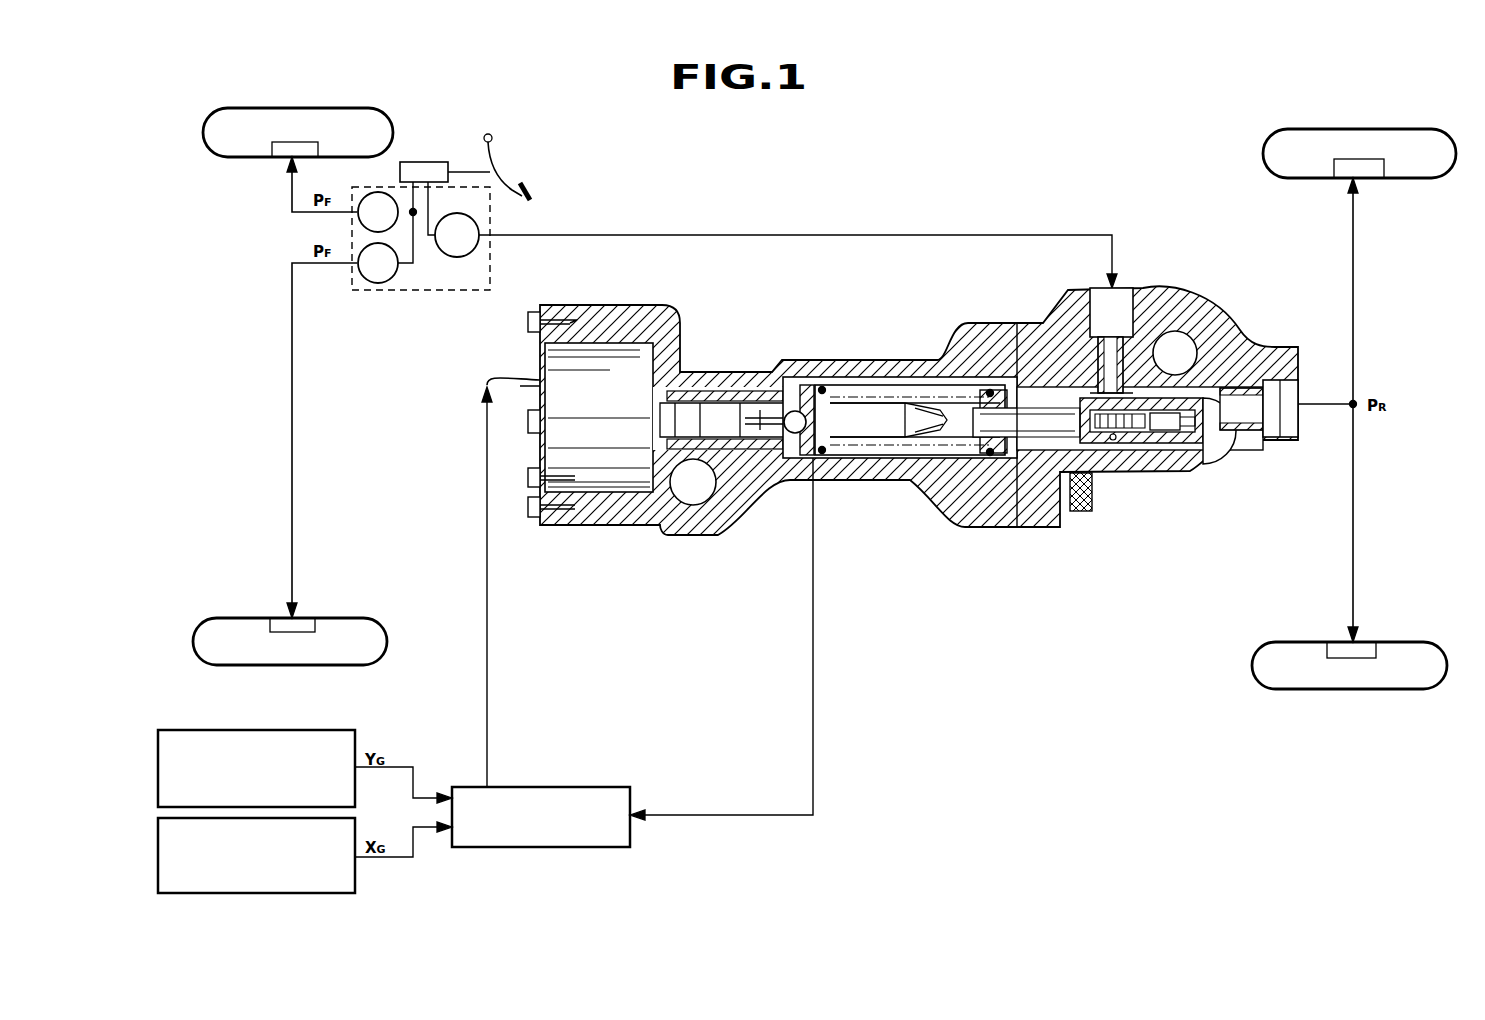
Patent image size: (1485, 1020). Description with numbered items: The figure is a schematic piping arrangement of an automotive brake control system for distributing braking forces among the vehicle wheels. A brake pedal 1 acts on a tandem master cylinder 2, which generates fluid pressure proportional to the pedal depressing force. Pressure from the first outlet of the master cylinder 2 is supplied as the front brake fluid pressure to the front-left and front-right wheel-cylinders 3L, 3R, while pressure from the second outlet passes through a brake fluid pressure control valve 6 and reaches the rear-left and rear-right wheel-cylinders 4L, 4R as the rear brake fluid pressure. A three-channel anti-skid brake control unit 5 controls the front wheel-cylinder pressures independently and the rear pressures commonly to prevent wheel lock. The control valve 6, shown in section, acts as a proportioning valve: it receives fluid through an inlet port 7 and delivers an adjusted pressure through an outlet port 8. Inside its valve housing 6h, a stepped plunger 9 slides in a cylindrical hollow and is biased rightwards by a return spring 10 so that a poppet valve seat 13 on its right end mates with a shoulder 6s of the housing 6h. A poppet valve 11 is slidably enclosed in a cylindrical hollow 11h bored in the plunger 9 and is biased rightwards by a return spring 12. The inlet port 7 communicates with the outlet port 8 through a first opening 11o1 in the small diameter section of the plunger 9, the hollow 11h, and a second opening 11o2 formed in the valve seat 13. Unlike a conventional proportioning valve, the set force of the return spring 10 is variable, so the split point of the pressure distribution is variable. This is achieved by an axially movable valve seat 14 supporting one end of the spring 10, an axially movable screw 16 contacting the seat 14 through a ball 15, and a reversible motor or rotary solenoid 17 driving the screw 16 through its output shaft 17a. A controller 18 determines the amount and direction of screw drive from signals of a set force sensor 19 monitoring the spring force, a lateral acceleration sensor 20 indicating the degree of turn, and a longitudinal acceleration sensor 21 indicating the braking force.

The brake pedal 1 is at (535, 193).
The tandem master cylinder 2 is at (428, 162).
The front-right wheel-cylinder 3R is at (280, 152).
The front-left wheel-cylinder 3L is at (300, 618).
The rear-right wheel-cylinder 4R is at (1360, 170).
The rear-left wheel-cylinder 4L is at (1360, 641).
The 3-channel anti-skid brake control unit 5 is at (433, 292).
The brake fluid pressure control valve 6 is at (1207, 295).
The valve housing 6h is at (1217, 333).
The shoulder 6s is at (1212, 415).
The inlet port 7 is at (1110, 302).
The outlet port 8 is at (1277, 413).
The stepped plunger 9 is at (1017, 412).
The return spring 10 is at (905, 470).
The poppet valve 11 is at (1187, 444).
The first opening 11o1 is at (1050, 503).
The second opening 11o2 is at (1207, 436).
The cylindrical hollow 11h is at (1113, 443).
The return spring 12 is at (1110, 443).
The poppet valve seat 13 is at (1197, 430).
The axially movable valve seat 14 is at (808, 385).
The ball 15 is at (795, 411).
The axially movable screw 16 is at (745, 445).
The reversible motor or rotary solenoid 17 is at (627, 372).
The output shaft 17a is at (666, 497).
The controller 18 is at (590, 787).
The set force sensor 19 is at (820, 456).
The lateral acceleration sensor 20 is at (283, 730).
The longitudinal acceleration sensor 21 is at (360, 818).